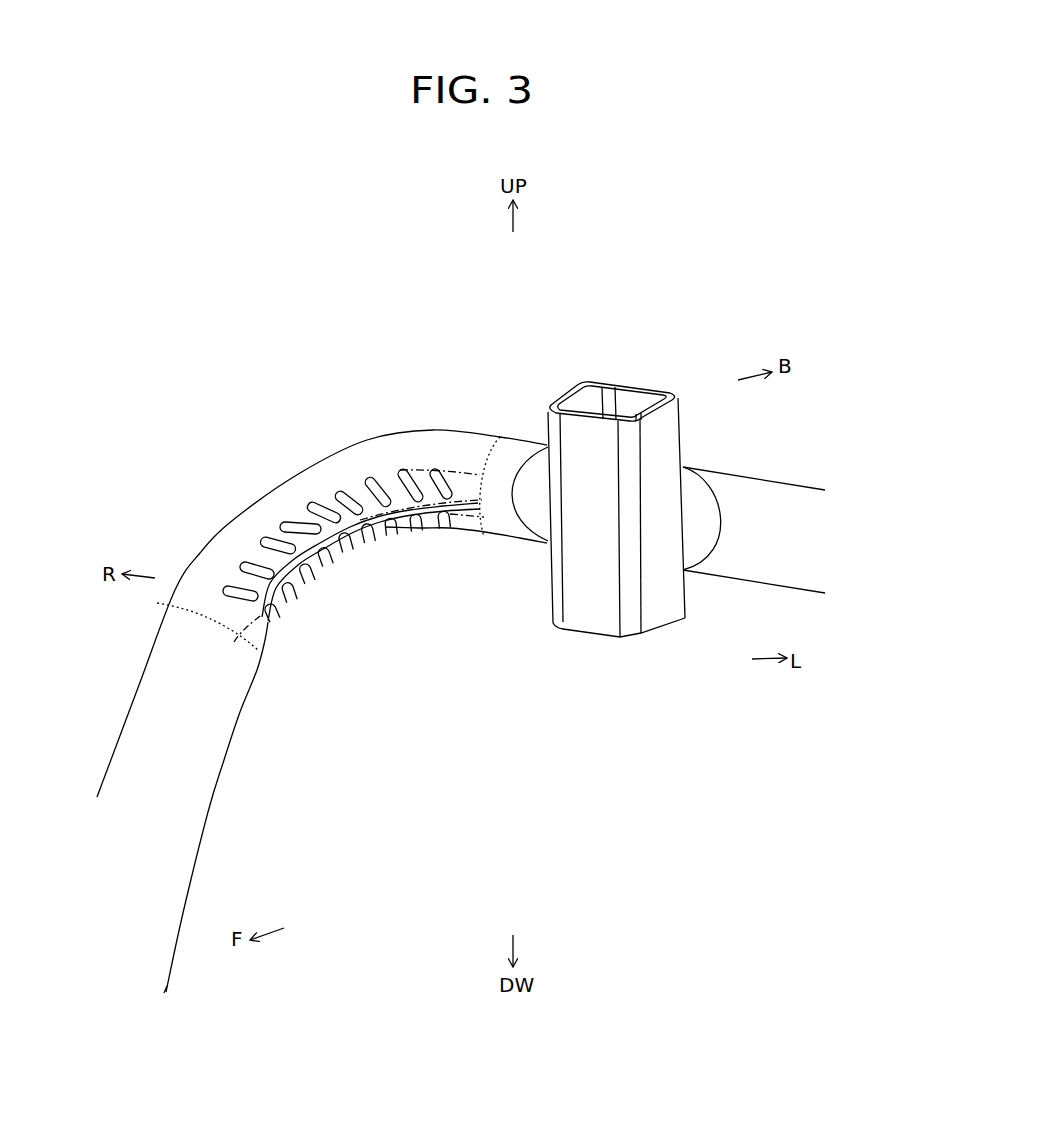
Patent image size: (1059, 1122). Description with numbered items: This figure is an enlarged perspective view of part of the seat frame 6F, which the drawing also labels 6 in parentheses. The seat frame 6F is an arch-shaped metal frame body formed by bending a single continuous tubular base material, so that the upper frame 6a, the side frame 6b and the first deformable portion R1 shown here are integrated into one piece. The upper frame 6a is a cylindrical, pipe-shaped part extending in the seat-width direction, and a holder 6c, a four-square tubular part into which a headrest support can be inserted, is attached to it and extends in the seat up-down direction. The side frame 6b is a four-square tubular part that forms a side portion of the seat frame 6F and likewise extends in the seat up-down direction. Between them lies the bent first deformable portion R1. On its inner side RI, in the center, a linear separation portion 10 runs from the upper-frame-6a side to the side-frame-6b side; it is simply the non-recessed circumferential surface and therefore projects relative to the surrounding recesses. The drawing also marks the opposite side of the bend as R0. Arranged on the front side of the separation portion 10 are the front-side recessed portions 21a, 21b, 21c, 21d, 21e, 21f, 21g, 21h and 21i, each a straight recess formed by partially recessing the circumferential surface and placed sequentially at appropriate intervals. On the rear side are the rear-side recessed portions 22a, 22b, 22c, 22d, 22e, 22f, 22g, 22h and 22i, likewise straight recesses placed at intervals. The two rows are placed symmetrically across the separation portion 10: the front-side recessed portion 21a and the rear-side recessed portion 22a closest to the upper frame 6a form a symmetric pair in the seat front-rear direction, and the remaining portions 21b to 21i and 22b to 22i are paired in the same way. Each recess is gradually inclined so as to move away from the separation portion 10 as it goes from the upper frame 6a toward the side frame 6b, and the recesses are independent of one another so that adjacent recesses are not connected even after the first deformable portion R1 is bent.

The tube 6 is at (461, 670).
The seat frame 6F is at (553, 312).
The upper frame 6a is at (778, 493).
The side frame 6b is at (173, 813).
The holder 6c is at (620, 397).
The separation portion 10 is at (254, 621).
The front-side recessed portion 21a is at (436, 472).
The front-side recessed portion 21b is at (404, 471).
The front-side recessed portion 21c is at (371, 480).
The front-side recessed portion 21d is at (340, 494).
The front-side recessed portion 21e is at (312, 505).
The front-side recessed portion 21f is at (285, 524).
The front-side recessed portion 21g is at (265, 540).
The front-side recessed portion 21h is at (245, 565).
The front-side recessed portion 21i is at (228, 590).
The rear-side recessed portion 22a is at (445, 530).
The rear-side recessed portion 22b is at (418, 532).
The rear-side recessed portion 22c is at (393, 536).
The rear-side recessed portion 22d is at (371, 543).
The rear-side recessed portion 22e is at (349, 553).
The rear-side recessed portion 22f is at (329, 567).
The rear-side recessed portion 22g is at (311, 584).
The rear-side recessed portion 22h is at (293, 603).
The rear-side recessed portion 22i is at (276, 621).
The outer bend radius R0 is at (181, 574).
The first deformable portion R1 is at (390, 430).
The inner side RI is at (267, 655).